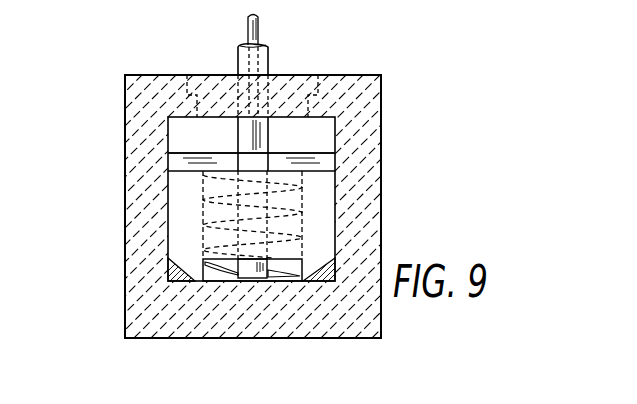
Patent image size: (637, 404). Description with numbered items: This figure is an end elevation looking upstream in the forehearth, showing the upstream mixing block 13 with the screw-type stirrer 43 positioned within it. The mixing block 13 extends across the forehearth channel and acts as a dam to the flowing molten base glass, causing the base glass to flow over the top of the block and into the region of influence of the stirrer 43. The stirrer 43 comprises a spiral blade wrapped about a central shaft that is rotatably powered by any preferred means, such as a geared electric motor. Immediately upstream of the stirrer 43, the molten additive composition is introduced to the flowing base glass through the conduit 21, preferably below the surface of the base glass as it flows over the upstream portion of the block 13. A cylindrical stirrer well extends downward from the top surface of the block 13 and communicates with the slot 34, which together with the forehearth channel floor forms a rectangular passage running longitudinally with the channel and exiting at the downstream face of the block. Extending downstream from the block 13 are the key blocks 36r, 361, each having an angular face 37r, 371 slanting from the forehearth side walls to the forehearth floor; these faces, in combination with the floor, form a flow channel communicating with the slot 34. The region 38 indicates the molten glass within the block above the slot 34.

The mixing block 13 is at (335, 153).
The conduit 21 is at (248, 32).
The slot 34 is at (218, 272).
The key block 36r is at (182, 268).
The key block 361 is at (337, 270).
The angular face 37r is at (237, 270).
The angular face 371 is at (333, 272).
The fluid chamber 38 is at (190, 152).
The screw-type stirrer 43 is at (300, 155).